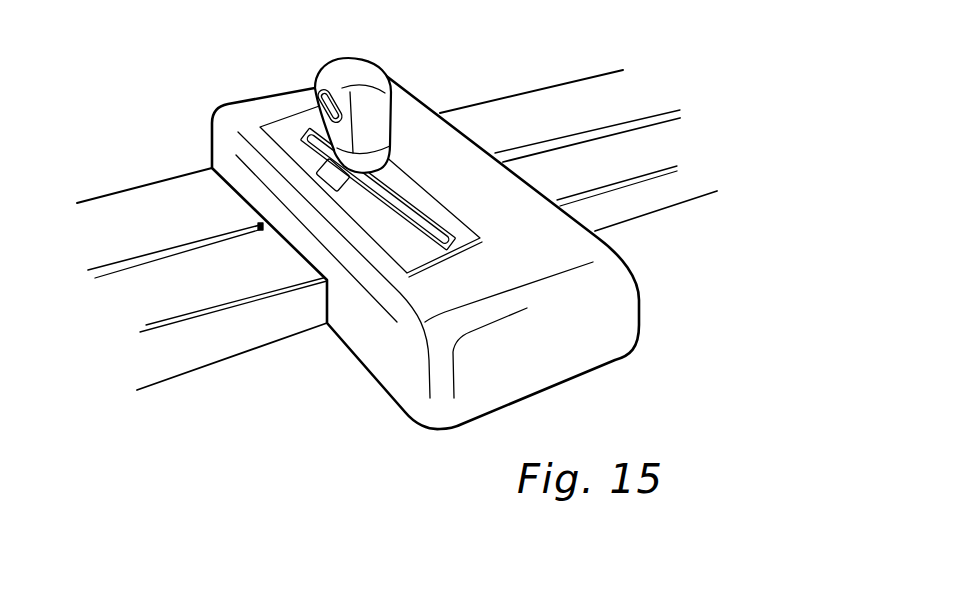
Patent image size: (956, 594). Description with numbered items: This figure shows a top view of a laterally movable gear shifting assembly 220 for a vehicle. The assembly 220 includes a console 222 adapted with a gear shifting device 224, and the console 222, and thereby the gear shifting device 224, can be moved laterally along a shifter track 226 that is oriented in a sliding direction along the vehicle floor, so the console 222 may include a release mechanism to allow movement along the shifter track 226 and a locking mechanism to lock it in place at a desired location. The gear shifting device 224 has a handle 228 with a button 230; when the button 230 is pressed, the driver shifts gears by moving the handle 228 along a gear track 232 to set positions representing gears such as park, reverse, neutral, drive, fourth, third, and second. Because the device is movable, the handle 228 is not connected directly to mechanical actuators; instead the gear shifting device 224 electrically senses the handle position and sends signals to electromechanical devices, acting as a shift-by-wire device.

The laterally movable gear shifting assembly 220 is at (421, 214).
The console 222 is at (437, 297).
The gear shifting device 224 is at (436, 100).
The shifter track 226 is at (585, 101).
The handle 228 is at (280, 86).
The button 230 is at (321, 98).
The gear track 232 is at (443, 224).